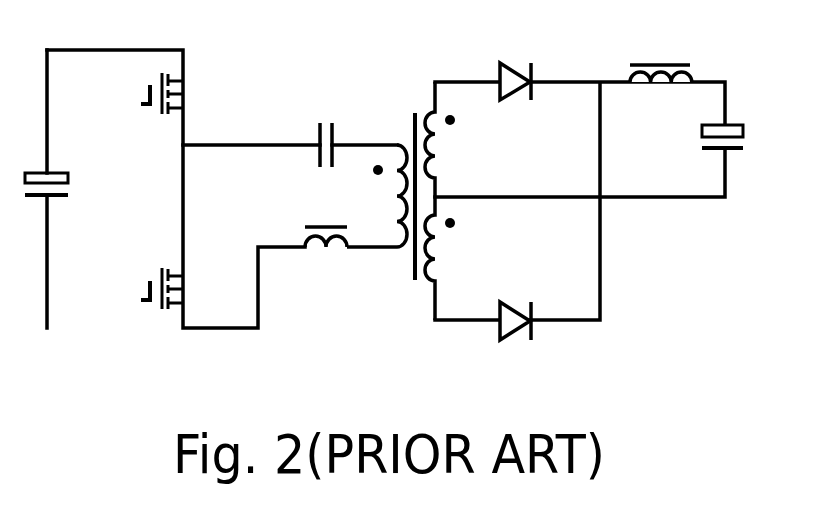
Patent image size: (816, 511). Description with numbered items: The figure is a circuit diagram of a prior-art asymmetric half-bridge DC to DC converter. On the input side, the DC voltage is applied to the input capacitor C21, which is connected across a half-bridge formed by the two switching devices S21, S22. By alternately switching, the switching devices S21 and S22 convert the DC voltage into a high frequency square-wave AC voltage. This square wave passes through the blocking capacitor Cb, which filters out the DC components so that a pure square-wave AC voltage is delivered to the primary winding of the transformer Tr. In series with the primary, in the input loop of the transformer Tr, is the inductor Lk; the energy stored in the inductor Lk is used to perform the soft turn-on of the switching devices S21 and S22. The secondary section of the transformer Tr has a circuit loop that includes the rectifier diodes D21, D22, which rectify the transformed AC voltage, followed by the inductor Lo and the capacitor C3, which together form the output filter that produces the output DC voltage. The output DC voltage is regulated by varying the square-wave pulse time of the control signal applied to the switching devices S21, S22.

The switching device S21 is at (139, 93).
The switching device S22 is at (139, 288).
The input capacitor C21 is at (66, 184).
The blocking capacitor Cb is at (331, 128).
The inductor Lk is at (351, 256).
The transformer Tr is at (414, 201).
The rectifier diode D21 is at (514, 97).
The rectifier diode D22 is at (512, 304).
The inductor Lo is at (661, 91).
The capacitor C3 is at (702, 152).